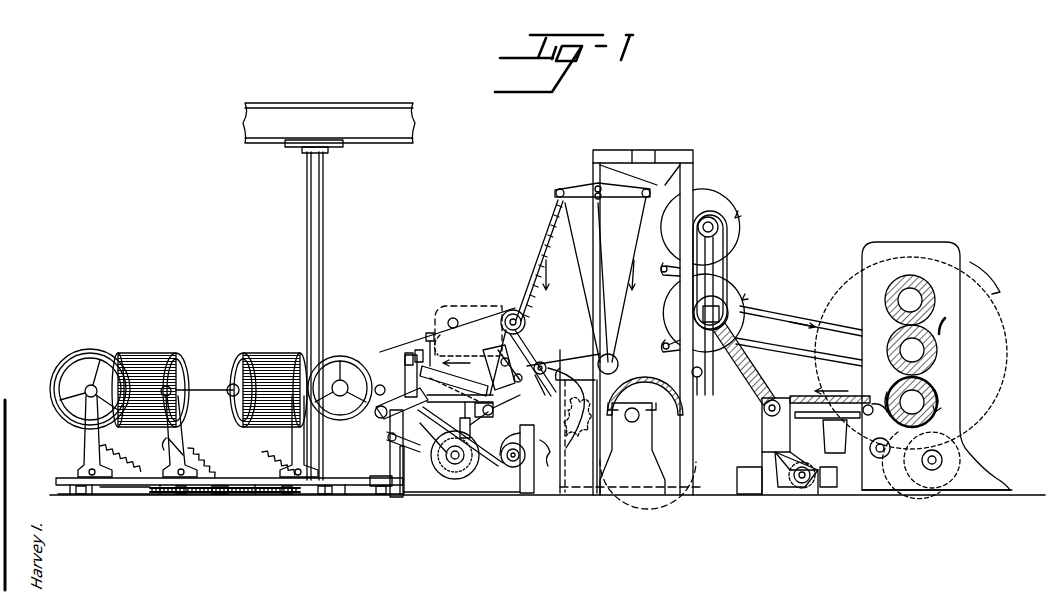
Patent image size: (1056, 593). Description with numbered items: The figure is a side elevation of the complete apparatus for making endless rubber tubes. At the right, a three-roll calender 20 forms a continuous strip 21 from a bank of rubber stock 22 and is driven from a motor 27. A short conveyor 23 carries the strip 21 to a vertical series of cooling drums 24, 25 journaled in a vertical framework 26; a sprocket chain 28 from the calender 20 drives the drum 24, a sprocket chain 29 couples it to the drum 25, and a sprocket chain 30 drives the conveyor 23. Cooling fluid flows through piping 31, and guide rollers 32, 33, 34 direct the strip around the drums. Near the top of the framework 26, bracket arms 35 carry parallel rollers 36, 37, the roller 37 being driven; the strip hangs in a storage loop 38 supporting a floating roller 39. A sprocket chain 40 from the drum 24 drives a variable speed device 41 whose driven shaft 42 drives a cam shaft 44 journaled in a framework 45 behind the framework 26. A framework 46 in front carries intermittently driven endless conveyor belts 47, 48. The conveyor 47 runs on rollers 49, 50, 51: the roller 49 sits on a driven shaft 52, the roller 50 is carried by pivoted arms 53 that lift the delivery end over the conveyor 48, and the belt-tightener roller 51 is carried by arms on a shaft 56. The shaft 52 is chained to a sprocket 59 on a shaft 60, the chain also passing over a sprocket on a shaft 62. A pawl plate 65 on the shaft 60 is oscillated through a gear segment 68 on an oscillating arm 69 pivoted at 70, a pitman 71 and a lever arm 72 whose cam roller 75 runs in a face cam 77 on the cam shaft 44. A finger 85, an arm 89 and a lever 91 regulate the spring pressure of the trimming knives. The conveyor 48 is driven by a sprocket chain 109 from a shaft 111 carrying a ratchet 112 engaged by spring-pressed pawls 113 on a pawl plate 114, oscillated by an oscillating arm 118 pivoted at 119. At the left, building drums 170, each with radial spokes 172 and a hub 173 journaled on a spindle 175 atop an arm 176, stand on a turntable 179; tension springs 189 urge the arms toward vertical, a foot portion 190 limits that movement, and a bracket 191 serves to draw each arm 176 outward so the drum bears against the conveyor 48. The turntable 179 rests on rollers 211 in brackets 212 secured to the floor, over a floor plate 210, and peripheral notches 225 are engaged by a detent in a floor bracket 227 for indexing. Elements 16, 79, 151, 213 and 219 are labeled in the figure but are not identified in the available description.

The roller 16 is at (670, 390).
The three roll rubber-working calender 20 is at (958, 380).
The strip 21 is at (548, 283).
The bank of rubber stock 22 is at (938, 315).
The short conveyor 23 is at (818, 402).
The cooling drum 24 is at (748, 312).
The cooling drum 25 is at (745, 228).
The vertical framework 26 is at (696, 175).
The motor 27 is at (960, 462).
The sprocket chain 28 is at (800, 318).
The sprocket chain 29 is at (725, 270).
The sprocket chain 30 is at (742, 352).
The piping 31 is at (720, 235).
The guide roller 32 is at (752, 400).
The guide roller 33 is at (666, 350).
The guide roller 34 is at (668, 280).
The bracket arms 35 is at (583, 190).
The roller 36 is at (644, 200).
The roller 37 is at (553, 193).
The reserve or storage loop 38 is at (588, 290).
The floating roller 39 is at (618, 352).
The sprocket chain 40 is at (757, 425).
The variable speed device 41 is at (786, 457).
The driven shaft 42 is at (765, 494).
The cam shaft 44 is at (632, 423).
The framework 45 is at (472, 315).
The framework 46 is at (540, 480).
The endless conveyor belt 47 is at (454, 381).
The endless conveyor belt 48 is at (406, 372).
The roller 49 is at (482, 375).
The roller 50 is at (470, 344).
The roller 51 is at (474, 420).
The shaft 52 is at (477, 406).
The pivoted arms 53 is at (401, 441).
The shaft 56 is at (460, 436).
The sprocket 59 is at (513, 466).
The shaft 60 is at (551, 436).
The shaft 62 is at (540, 374).
The pawl plate 65 is at (539, 459).
The gear segment 68 is at (547, 454).
The oscillating arm 69 is at (563, 352).
The pivot 70 is at (510, 318).
The pitman 71 is at (576, 363).
The lever arm 72 is at (665, 440).
The cam roller 75 is at (697, 378).
The face cam 77 is at (570, 408).
The belt 79 is at (545, 243).
The finger 85 is at (516, 360).
The arm 89 is at (503, 350).
The lever 91 is at (546, 399).
The sprocket chain 109 is at (438, 455).
The shaft 111 is at (450, 462).
The ratchet 112 is at (458, 462).
The spring-pressed pawls 113 is at (438, 462).
The pawl plate 114 is at (460, 480).
The oscillating arm 118 is at (440, 335).
The pivot 119 is at (452, 318).
The lever 151 is at (402, 345).
The drum 170 is at (84, 360).
The radial spokes 172 is at (70, 366).
The hub portion 173 is at (209, 390).
The horizontal spindle 175 is at (234, 388).
The arm 176 is at (84, 430).
The turntable 179 is at (66, 480).
The tension springs 189 is at (128, 468).
The foot portion 190 is at (122, 488).
The bracket 191 is at (167, 456).
The floor plate 210 is at (205, 493).
The rollers 211 is at (85, 494).
The brackets 212 is at (330, 494).
The pinion 213 is at (222, 496).
The column 219 is at (322, 246).
The notches 225 is at (62, 488).
The floor bracket 227 is at (384, 496).